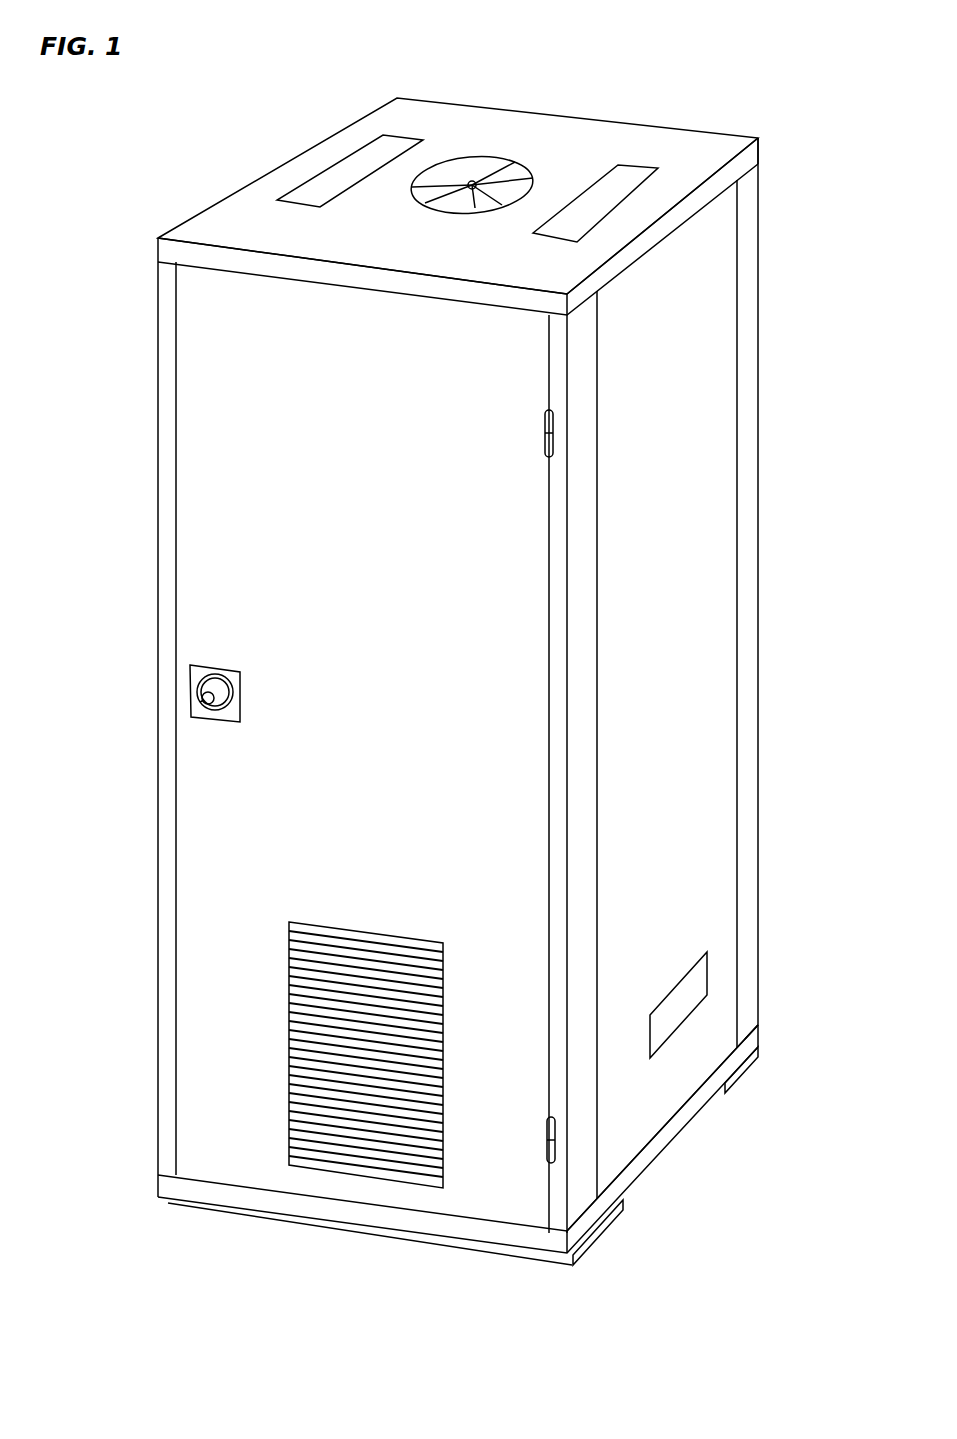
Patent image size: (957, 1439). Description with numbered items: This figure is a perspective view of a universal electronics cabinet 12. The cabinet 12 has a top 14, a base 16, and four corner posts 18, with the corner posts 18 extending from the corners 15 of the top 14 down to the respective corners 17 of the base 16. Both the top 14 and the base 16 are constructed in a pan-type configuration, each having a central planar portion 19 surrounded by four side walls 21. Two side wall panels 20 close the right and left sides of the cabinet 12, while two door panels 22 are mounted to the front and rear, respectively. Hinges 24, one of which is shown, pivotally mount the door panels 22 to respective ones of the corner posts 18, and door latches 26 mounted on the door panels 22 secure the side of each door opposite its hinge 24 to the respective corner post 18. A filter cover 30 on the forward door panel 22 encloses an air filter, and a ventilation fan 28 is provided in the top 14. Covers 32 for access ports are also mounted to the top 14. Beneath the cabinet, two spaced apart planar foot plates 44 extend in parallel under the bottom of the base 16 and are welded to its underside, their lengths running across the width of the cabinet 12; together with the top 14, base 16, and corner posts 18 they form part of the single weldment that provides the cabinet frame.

The universal electronics cabinet 12 is at (575, 50).
The top 14 is at (728, 143).
The corners of the top 15 is at (760, 147).
The base 16 is at (673, 1135).
The corners of the base 17 is at (760, 1032).
The corner posts 18 is at (583, 345).
The central planar portion 19 is at (472, 118).
The side wall panels 20 is at (693, 575).
The side walls 21 is at (665, 227).
The door panels 22 is at (207, 437).
The hinges 24 is at (549, 423).
The door latches 26 is at (200, 705).
The ventilation fan 28 is at (493, 167).
The filter cover 30 is at (307, 1083).
The covers 32 is at (318, 183).
The foot plates 44 is at (748, 1068).